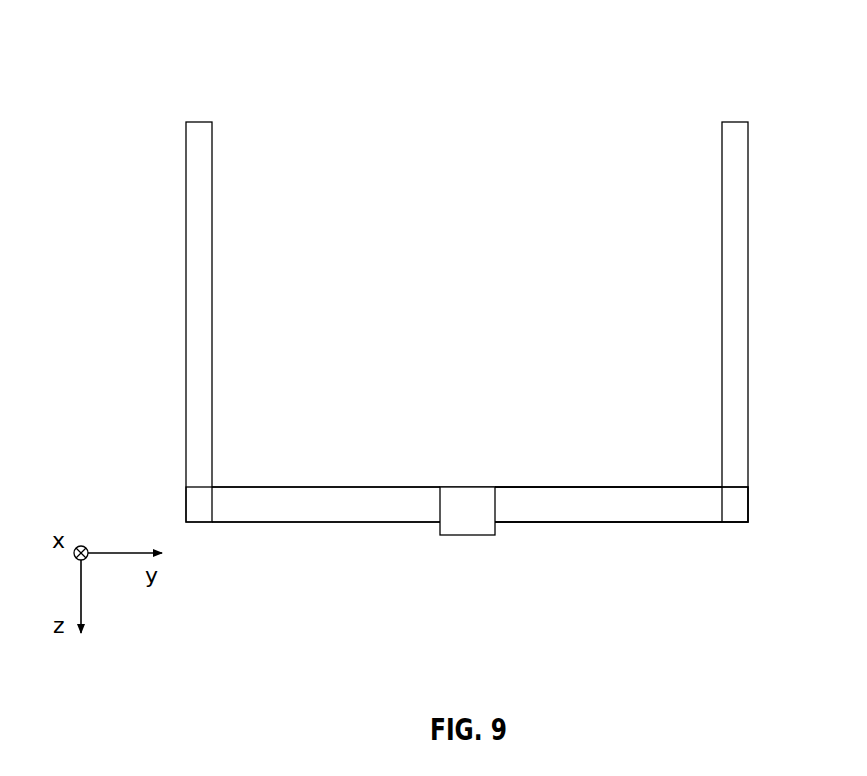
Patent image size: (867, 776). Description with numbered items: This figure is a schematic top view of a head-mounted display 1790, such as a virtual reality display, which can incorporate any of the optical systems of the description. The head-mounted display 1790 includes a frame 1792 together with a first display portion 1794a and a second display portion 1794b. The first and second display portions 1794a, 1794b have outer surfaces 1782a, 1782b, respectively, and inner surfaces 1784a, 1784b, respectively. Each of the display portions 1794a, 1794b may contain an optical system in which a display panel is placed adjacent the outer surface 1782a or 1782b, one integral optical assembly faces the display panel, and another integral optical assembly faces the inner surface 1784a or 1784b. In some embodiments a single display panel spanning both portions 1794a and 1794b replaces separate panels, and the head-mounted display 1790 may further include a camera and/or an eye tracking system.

The head-mounted display 1790 is at (121, 56).
The frame 1792 is at (203, 207).
The outer surface 1782a is at (275, 523).
The outer surface 1782b is at (668, 523).
The inner surface 1784a is at (283, 487).
The inner surface 1784b is at (630, 487).
The first display portion 1794a is at (382, 502).
The second display portion 1794b is at (556, 502).